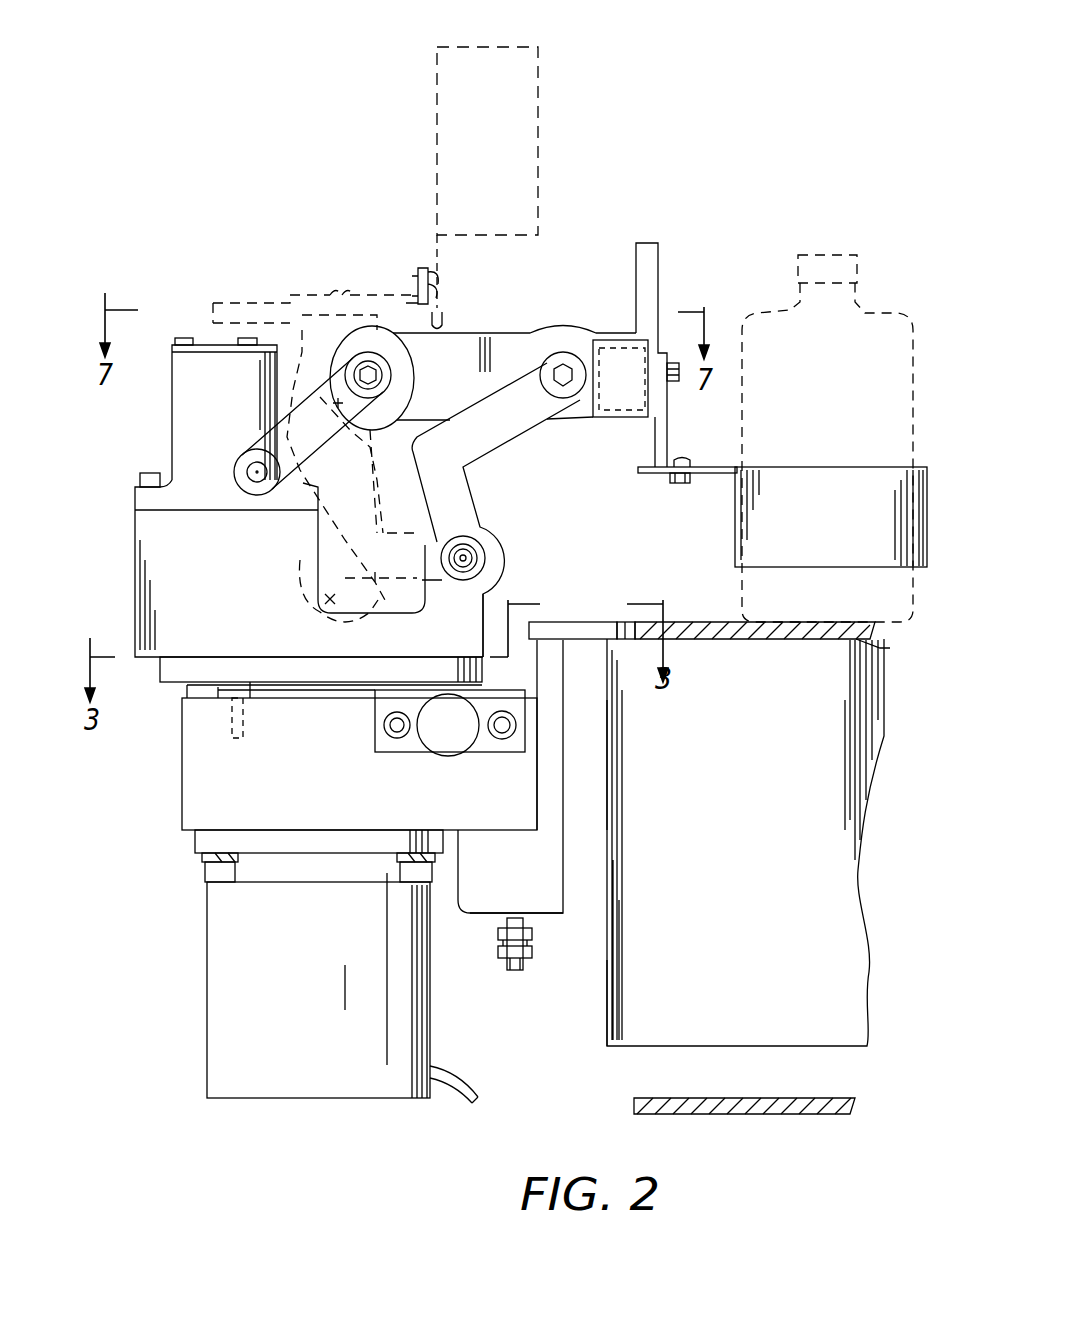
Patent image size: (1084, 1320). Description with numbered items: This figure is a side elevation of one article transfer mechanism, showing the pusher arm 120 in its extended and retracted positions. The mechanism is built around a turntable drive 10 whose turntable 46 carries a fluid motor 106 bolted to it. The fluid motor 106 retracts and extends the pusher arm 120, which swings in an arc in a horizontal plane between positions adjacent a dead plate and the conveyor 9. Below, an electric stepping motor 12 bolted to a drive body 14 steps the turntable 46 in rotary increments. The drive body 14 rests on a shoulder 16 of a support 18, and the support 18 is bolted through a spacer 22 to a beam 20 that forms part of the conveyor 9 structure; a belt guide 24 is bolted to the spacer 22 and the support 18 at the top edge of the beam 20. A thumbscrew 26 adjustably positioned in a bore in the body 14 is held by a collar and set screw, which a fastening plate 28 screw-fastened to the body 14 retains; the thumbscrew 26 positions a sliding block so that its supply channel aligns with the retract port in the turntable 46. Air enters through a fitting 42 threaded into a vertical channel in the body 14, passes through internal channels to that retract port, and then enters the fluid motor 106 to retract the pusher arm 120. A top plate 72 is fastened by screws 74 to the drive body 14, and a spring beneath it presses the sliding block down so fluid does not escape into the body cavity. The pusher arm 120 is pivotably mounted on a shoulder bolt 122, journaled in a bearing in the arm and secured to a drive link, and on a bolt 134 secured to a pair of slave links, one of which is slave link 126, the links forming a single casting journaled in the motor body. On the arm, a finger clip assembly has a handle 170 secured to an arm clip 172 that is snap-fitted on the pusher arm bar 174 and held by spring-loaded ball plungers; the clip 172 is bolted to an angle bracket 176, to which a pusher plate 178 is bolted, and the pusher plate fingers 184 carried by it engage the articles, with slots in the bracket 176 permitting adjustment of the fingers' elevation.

The conveyor 9 is at (710, 615).
The turntable drive 10 is at (728, 670).
The electric stepping motor 12 is at (217, 973).
The drive body 14 is at (190, 787).
The shoulder 16 is at (512, 822).
The support 18 is at (553, 925).
The beam 20 is at (612, 1012).
The spacer 22 is at (609, 760).
The belt guide 24 is at (633, 620).
The thumbscrew 26 is at (449, 700).
The fastening plate 28 is at (373, 722).
The fitting 42 is at (497, 948).
The turntable 46 is at (313, 676).
The top plate 72 is at (257, 690).
The screws 74 is at (250, 728).
The fluid motor 106 is at (137, 535).
The pusher arm 120 is at (501, 322).
The shoulder bolt 122 is at (385, 362).
The slave link 126 is at (487, 430).
The bolt 134 is at (566, 362).
The handle 170 is at (657, 257).
The arm clip 172 is at (661, 398).
The pusher arm bar 174 is at (630, 410).
The angle bracket 176 is at (672, 440).
The pusher plate 178 is at (655, 478).
The pusher plate fingers 184 is at (873, 466).